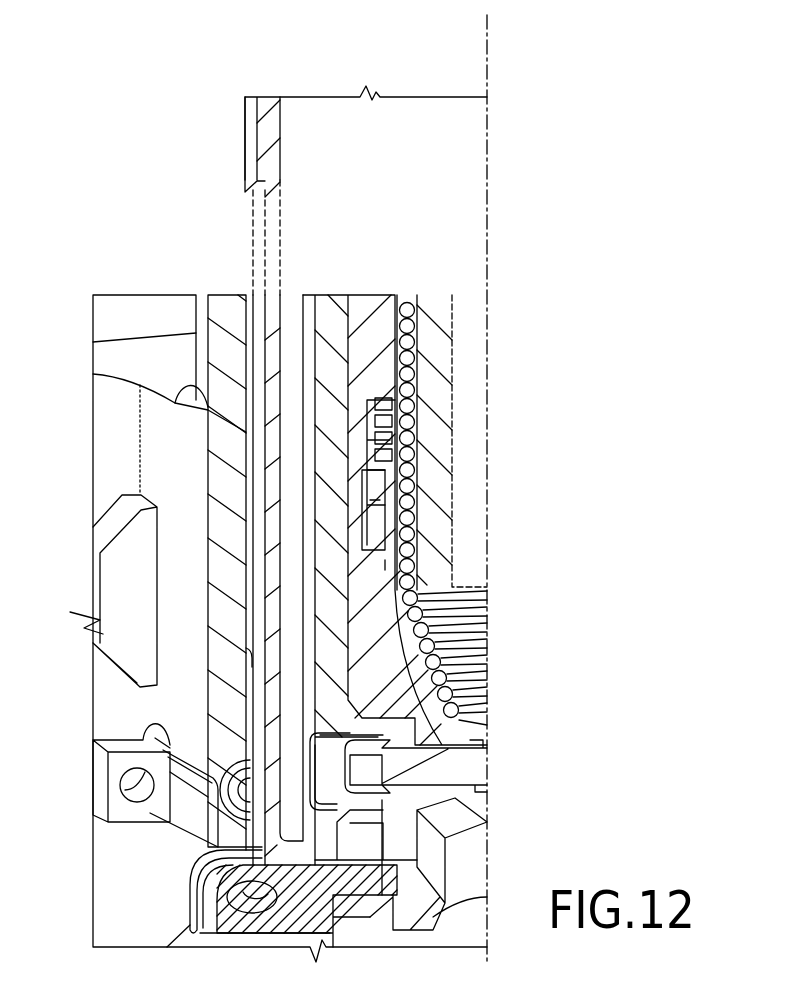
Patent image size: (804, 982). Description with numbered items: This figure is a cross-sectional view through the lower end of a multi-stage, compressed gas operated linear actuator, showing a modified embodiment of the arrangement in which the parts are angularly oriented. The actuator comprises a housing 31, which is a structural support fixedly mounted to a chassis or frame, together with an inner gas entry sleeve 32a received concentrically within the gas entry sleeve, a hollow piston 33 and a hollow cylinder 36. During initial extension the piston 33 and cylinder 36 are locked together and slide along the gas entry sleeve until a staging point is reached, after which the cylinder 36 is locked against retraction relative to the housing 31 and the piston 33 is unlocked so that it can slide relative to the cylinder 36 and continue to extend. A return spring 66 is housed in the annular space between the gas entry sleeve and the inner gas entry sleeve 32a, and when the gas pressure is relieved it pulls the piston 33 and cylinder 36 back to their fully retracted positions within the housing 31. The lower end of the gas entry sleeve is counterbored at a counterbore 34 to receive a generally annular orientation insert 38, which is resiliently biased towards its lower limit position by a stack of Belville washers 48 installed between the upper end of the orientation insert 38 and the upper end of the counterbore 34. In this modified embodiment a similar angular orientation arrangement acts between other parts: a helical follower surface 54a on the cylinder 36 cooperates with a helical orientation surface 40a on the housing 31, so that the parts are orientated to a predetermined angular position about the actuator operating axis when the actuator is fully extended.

The housing 31 is at (215, 297).
The hollow cylinder 36 is at (271, 312).
The hollow piston 33 is at (332, 312).
The return spring 66 is at (408, 302).
The inner gas entry sleeve 32a is at (475, 312).
The helical follower surface 54a is at (251, 191).
The orientation insert 38 is at (372, 482).
The Belville washers 48 is at (395, 545).
The counterbore 34 is at (372, 572).
The helical orientation surface 40a is at (249, 665).